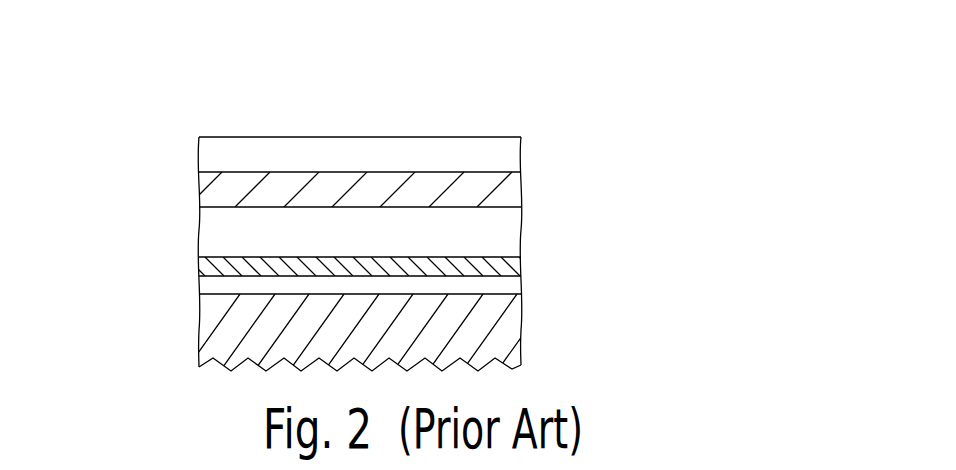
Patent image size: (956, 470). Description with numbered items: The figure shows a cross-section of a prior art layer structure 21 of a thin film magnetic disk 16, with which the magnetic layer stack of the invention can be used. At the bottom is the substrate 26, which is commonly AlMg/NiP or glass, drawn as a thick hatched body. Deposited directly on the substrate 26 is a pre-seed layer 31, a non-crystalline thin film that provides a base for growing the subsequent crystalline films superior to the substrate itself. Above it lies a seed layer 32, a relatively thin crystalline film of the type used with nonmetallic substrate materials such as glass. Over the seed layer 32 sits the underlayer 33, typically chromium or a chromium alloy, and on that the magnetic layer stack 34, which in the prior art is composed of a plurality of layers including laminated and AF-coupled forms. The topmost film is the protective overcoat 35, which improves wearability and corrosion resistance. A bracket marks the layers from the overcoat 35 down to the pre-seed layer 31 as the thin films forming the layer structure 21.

The disk 16 is at (258, 88).
The layer structure 21 is at (180, 137).
The substrate 26 is at (202, 325).
The pre-seed layer 31 is at (507, 286).
The seed layer 32 is at (512, 267).
The underlayer 33 is at (502, 237).
The magnetic layer stack 34 is at (510, 190).
The overcoat 35 is at (510, 143).